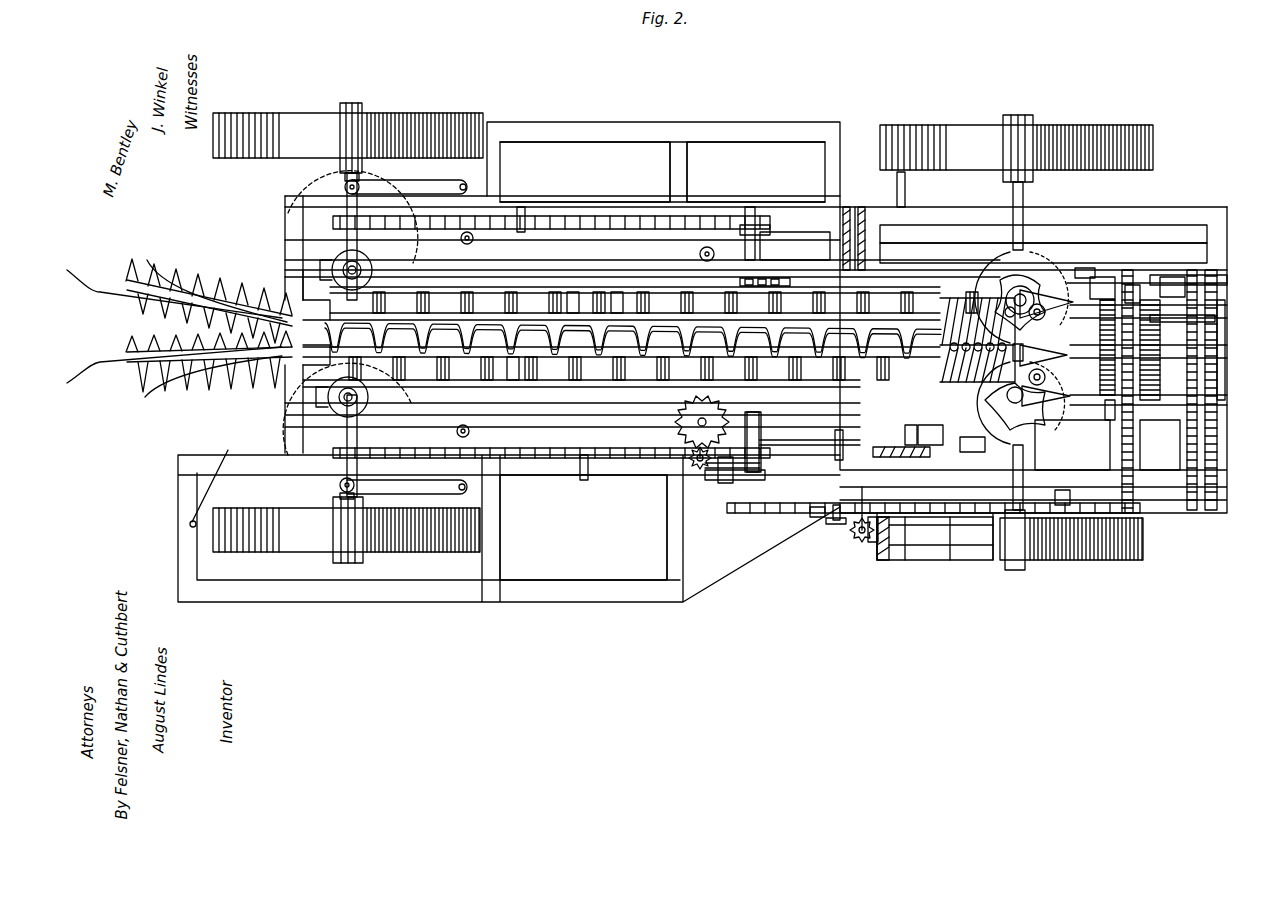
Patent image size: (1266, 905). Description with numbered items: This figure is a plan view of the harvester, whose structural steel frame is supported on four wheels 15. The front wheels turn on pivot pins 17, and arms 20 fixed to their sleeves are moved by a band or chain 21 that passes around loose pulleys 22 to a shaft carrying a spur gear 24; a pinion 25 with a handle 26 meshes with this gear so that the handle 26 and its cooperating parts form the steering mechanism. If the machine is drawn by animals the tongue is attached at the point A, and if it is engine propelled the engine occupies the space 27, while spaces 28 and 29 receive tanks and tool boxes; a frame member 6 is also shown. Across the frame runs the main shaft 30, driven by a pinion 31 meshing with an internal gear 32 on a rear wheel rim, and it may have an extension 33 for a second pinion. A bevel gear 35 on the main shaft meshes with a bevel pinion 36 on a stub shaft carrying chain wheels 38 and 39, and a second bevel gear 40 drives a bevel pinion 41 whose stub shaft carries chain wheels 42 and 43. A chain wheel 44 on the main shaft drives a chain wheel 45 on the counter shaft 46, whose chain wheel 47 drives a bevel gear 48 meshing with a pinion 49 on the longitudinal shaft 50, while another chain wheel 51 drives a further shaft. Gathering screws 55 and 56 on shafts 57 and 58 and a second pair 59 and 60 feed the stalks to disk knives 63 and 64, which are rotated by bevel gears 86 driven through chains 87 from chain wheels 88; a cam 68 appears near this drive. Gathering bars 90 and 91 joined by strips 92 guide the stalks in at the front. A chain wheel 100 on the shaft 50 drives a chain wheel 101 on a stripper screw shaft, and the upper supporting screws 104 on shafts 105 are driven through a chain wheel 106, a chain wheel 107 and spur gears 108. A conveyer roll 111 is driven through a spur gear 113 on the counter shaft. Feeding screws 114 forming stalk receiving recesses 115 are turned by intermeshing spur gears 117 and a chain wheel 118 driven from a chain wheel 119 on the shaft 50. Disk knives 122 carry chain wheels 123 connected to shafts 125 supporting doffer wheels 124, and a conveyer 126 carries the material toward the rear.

The frame base 6 is at (188, 526).
The wheels 15 is at (420, 117).
The pivot pins 17 is at (343, 185).
The arms 20 is at (420, 181).
The band or chain 21 is at (630, 216).
The loose pulleys 22 is at (461, 239).
The spur gear 24 is at (682, 425).
The pinion 25 is at (692, 462).
The handle 26 is at (720, 464).
The space 27 is at (583, 527).
The space 28 is at (585, 172).
The space 29 is at (756, 172).
The main shaft 30 is at (921, 435).
The pinion 31 is at (920, 560).
The internal gear 32 is at (872, 542).
The extension 33 is at (905, 200).
The bevel gear 35 is at (930, 455).
The bevel pinion 36 is at (835, 520).
The chain wheel 38 is at (835, 445).
The chain wheel 39 is at (817, 513).
The second bevel gear 40 is at (925, 237).
The bevel pinion 41 is at (907, 252).
The chain wheel 42 is at (847, 223).
The chain wheel 43 is at (867, 223).
The chain wheel 44 is at (968, 282).
The chain wheel 45 is at (740, 282).
The counter shaft 46 is at (762, 250).
The chain wheel 47 is at (760, 443).
The bevel gear 48 is at (858, 533).
The pinion 49 is at (833, 520).
The shaft 50 is at (1062, 500).
The chain wheel 51 is at (735, 506).
The gathering screw 55 is at (217, 277).
The gathering screw 56 is at (187, 392).
The shaft 57 is at (573, 300).
The shaft 58 is at (592, 378).
The gathering screw 59 is at (173, 273).
The gathering screw 60 is at (143, 395).
The disk knife 63 is at (400, 232).
The disk knife 64 is at (340, 415).
The cam 68 is at (370, 273).
The bevel gears 86 is at (343, 247).
The chains 87 is at (521, 217).
The chain wheels 88 is at (770, 230).
The gathering bars 90 is at (95, 293).
The gathering bars 91 is at (146, 260).
The strips 92 is at (160, 347).
The chain wheel 100 is at (1188, 512).
The chain wheel 101 is at (1222, 350).
The screws or helices 104 is at (620, 300).
The shafts 105 is at (1215, 318).
The chain wheel 106 is at (1227, 283).
The chain wheel 107 is at (1213, 512).
The spur gears 108 is at (1171, 277).
The roll 111 is at (795, 380).
The spur gear 113 is at (625, 378).
The feeding screws 114 is at (992, 290).
The stalk receiving recesses 115 is at (944, 435).
The intermeshing spur gears 117 is at (1106, 315).
The chain wheel 118 is at (1133, 287).
The chain wheel 119 is at (1119, 504).
The disk knives 122 is at (997, 250).
The chain wheels 123 is at (1025, 298).
The doffer wheels 124 is at (1053, 287).
The shafts 125 is at (1072, 445).
The conveyer 126 is at (1087, 273).
The point A is at (212, 477).